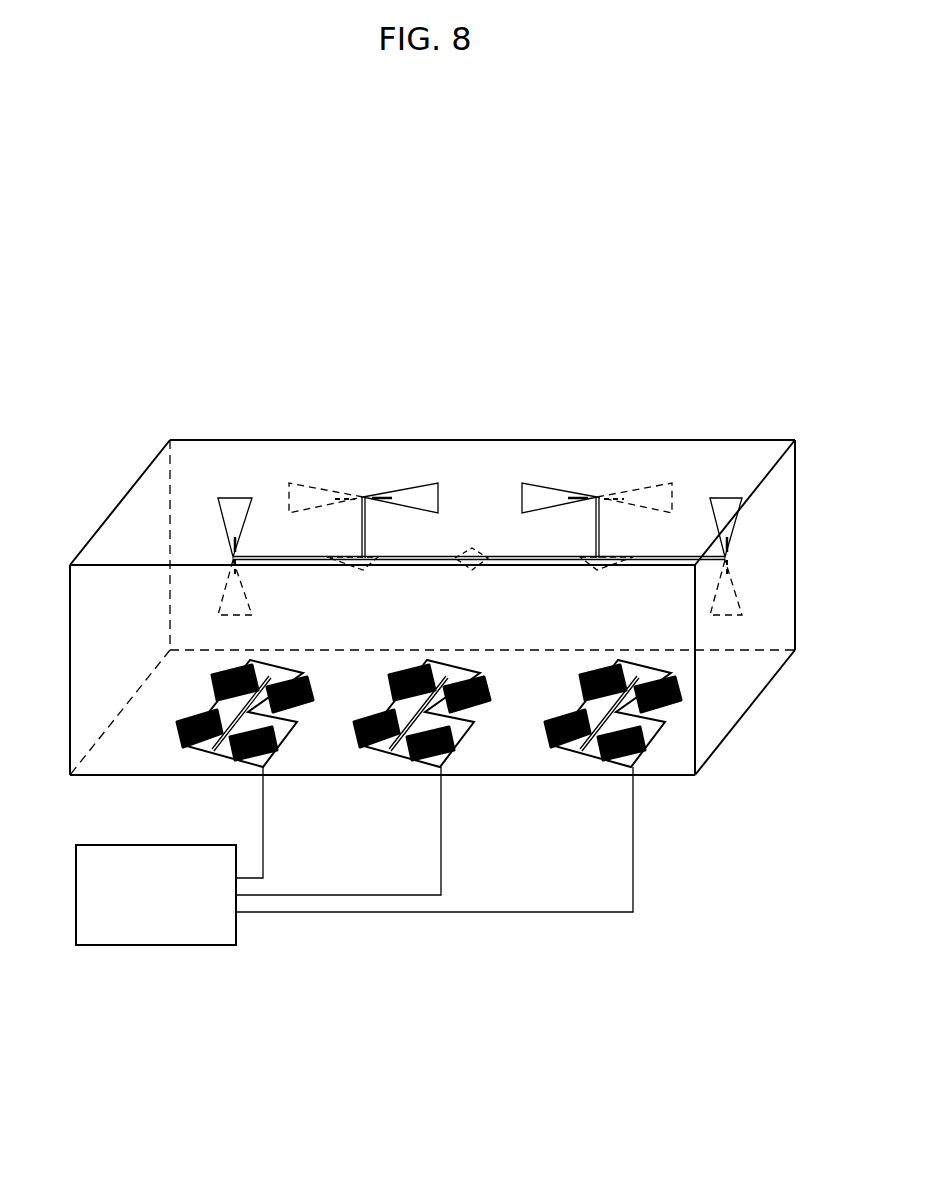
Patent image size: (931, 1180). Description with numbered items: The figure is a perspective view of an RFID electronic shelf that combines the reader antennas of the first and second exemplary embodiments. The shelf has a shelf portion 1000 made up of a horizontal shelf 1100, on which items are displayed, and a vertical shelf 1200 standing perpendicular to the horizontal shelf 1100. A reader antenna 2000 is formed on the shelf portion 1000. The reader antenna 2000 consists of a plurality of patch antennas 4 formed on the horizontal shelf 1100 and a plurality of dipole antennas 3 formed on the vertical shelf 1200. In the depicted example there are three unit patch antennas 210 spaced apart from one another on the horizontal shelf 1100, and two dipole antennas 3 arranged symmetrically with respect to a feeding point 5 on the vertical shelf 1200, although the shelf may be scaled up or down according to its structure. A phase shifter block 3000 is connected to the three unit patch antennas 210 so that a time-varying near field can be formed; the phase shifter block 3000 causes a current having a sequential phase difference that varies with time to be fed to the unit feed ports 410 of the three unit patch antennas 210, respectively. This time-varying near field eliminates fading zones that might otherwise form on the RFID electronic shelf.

The reader antenna 2000 is at (480, 481).
The dipole antenna 3 is at (412, 466).
The feeding point 5 is at (466, 546).
The patch antenna 4 is at (497, 685).
The unit patch antenna 210 is at (178, 733).
The unit feed port 410 is at (263, 768).
The horizontal shelf 1100 is at (713, 730).
The vertical shelf 1200 is at (760, 630).
The shelf portion 1000 is at (790, 848).
The phase shifter block 3000 is at (188, 947).